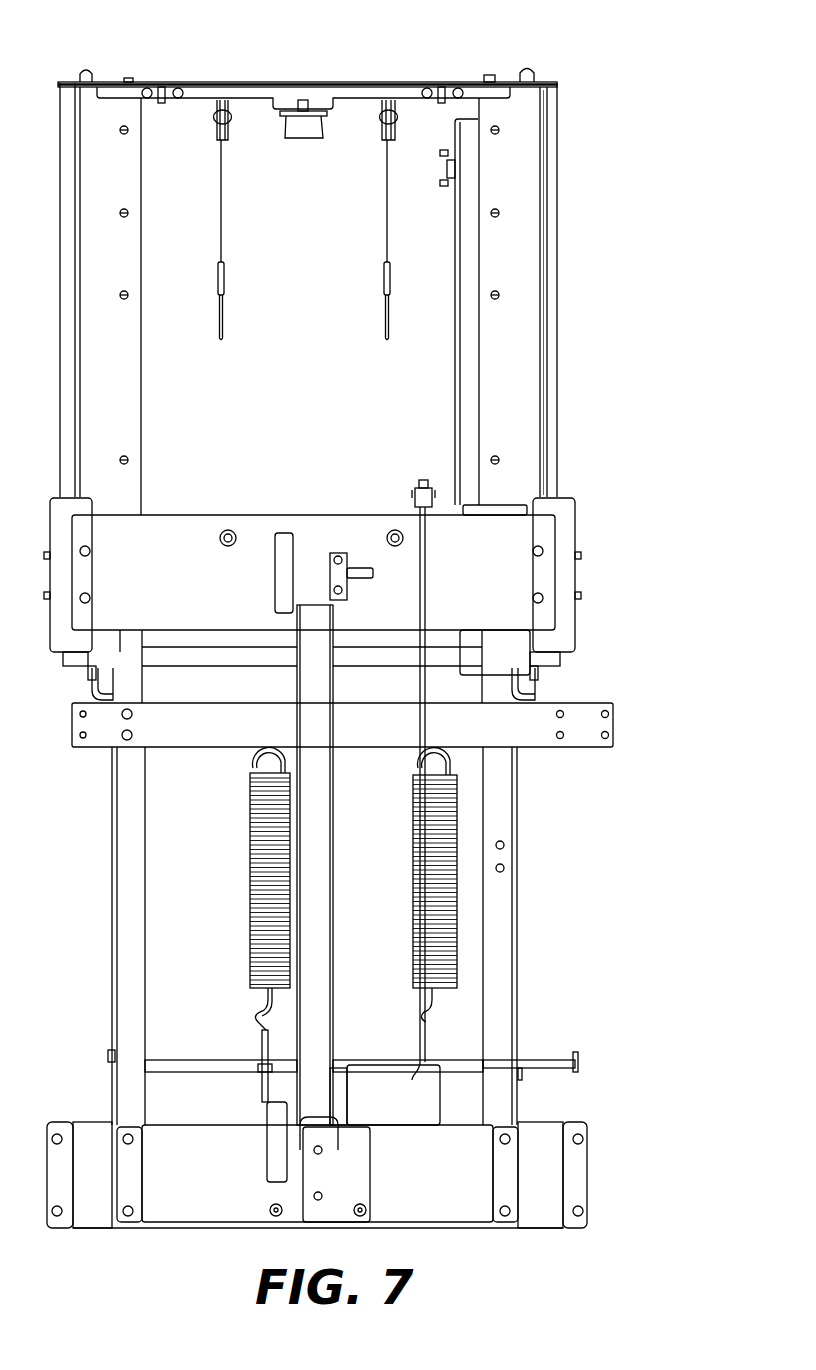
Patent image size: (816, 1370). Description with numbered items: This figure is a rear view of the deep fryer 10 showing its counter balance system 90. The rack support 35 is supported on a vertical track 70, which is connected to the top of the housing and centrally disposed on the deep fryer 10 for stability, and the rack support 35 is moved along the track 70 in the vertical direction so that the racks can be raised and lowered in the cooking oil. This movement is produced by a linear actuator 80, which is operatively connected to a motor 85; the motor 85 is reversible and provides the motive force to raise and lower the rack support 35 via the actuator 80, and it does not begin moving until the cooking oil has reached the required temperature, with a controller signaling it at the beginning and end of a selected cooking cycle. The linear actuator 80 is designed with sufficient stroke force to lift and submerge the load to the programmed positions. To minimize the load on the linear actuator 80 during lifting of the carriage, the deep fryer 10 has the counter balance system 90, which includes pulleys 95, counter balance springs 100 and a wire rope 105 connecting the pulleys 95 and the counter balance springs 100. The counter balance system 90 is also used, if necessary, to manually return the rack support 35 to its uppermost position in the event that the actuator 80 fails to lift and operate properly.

The deep fryer 10 is at (598, 48).
The rack support 35 is at (575, 518).
The track 70 is at (558, 333).
The linear actuator 80 is at (297, 682).
The motor 85 is at (386, 1062).
The counter balance system 90 is at (232, 823).
The pulleys 95 is at (378, 135).
The counter balance springs 100 is at (413, 878).
The wire rope 105 is at (383, 215).